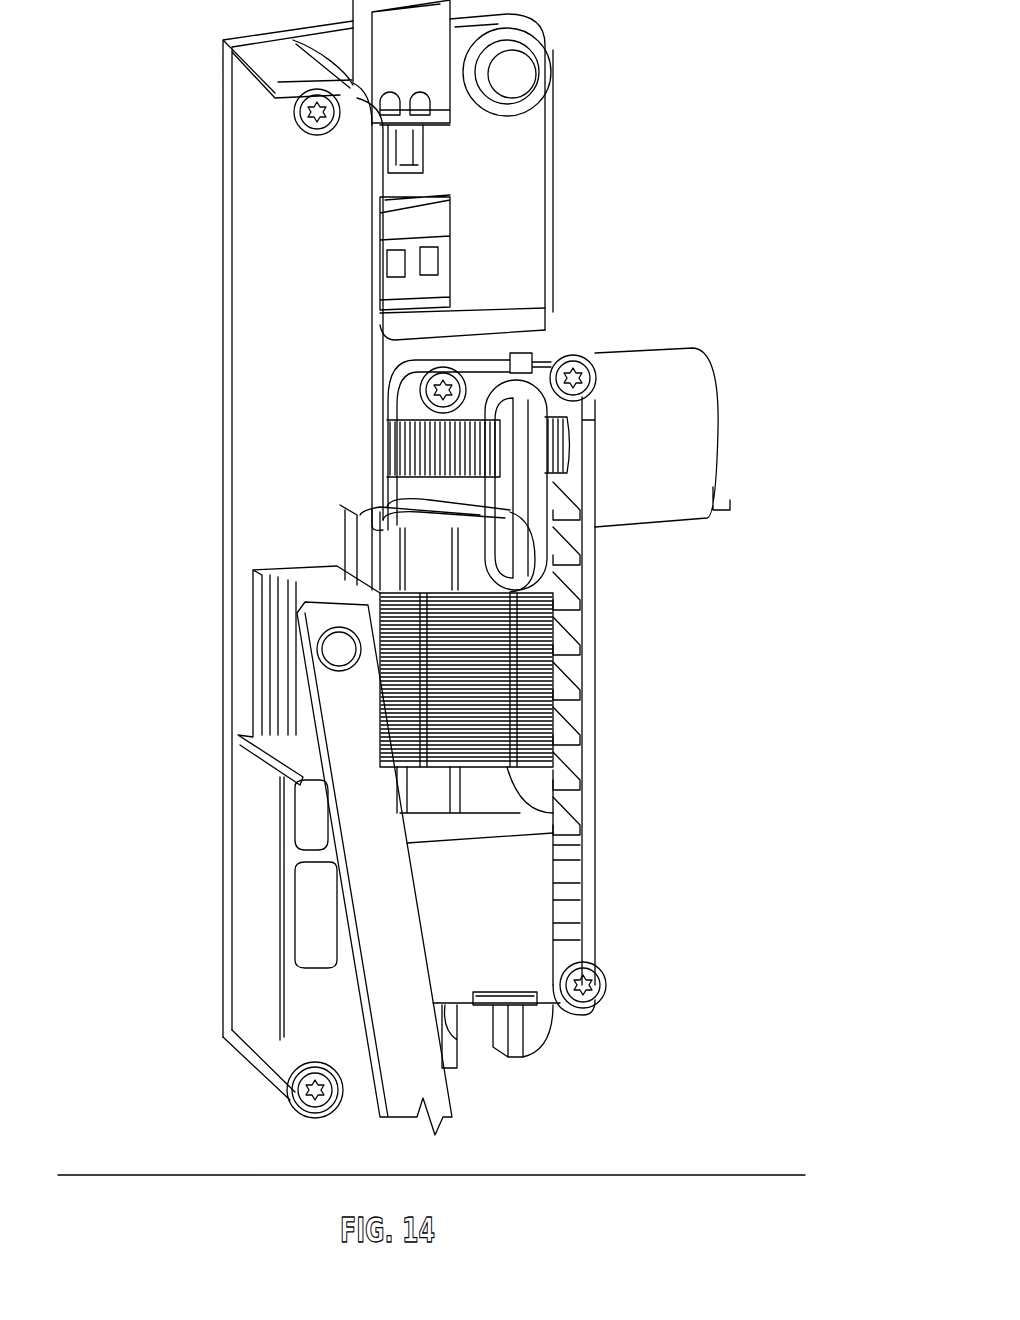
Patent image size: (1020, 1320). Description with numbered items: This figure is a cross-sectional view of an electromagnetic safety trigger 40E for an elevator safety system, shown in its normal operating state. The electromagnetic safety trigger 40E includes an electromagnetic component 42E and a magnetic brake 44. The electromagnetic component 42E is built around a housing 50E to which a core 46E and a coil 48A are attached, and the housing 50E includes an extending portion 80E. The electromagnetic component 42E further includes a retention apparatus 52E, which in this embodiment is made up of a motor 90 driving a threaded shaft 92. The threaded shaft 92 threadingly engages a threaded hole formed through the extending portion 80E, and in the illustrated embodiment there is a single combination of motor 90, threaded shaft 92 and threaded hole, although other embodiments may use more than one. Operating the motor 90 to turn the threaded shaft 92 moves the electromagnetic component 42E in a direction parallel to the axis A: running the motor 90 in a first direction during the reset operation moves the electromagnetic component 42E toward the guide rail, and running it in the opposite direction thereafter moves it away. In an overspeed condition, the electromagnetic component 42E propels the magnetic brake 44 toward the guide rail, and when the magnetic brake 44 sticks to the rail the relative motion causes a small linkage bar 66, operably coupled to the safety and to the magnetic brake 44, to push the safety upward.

The electromagnetic safety trigger 40E is at (716, 60).
The retention apparatus 52E is at (498, 334).
The extending portion 80E is at (520, 397).
The motor 90 is at (720, 422).
The threaded shaft 92 is at (395, 462).
The coil 48A is at (428, 565).
The housing 50E is at (530, 570).
The electromagnetic component 42E is at (670, 649).
The core 46E is at (520, 735).
The magnetic brake 44 is at (303, 752).
The linkage bar 66 is at (378, 1105).
The axis A is at (738, 1175).